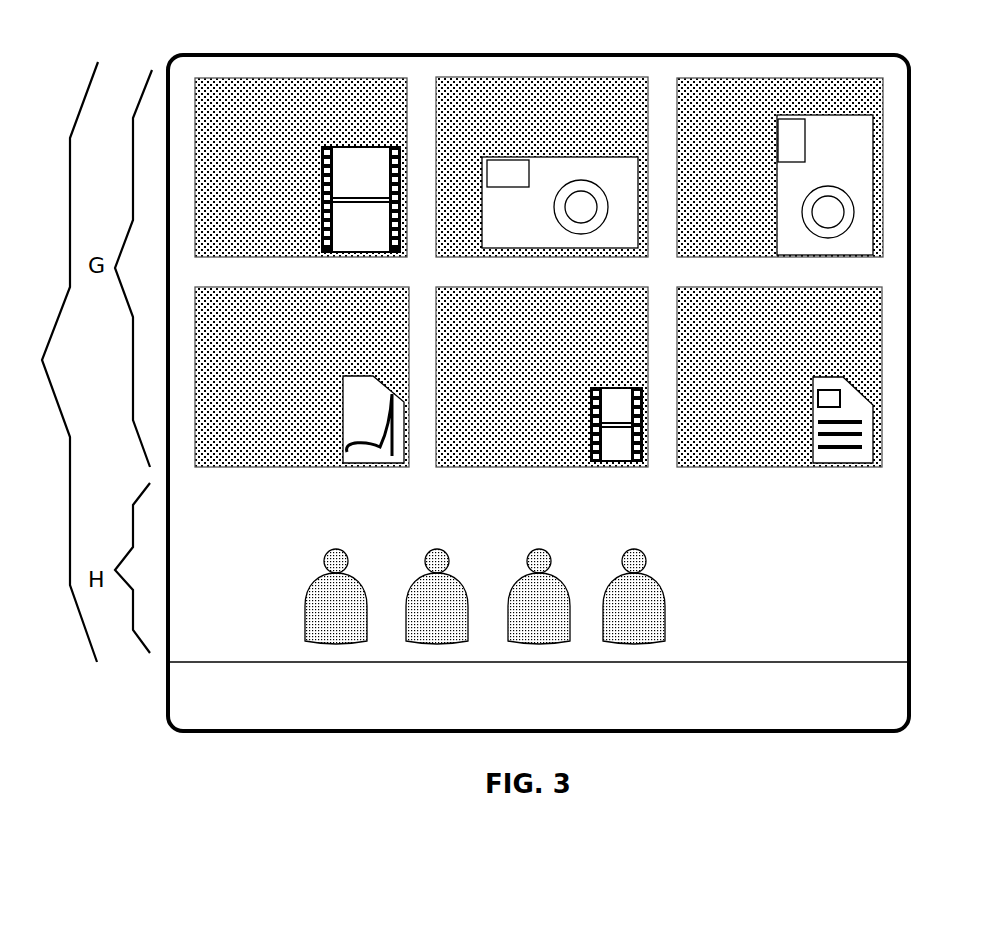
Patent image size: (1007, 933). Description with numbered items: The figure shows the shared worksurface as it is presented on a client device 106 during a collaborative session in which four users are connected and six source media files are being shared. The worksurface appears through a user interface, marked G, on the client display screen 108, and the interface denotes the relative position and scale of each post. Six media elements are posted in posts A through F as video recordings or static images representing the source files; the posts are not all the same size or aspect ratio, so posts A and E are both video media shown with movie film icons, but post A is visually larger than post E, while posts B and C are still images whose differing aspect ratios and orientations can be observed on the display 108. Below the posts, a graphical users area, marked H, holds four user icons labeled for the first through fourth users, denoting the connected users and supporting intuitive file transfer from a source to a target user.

The client device 106 is at (630, 707).
The client display screen 108 is at (752, 680).